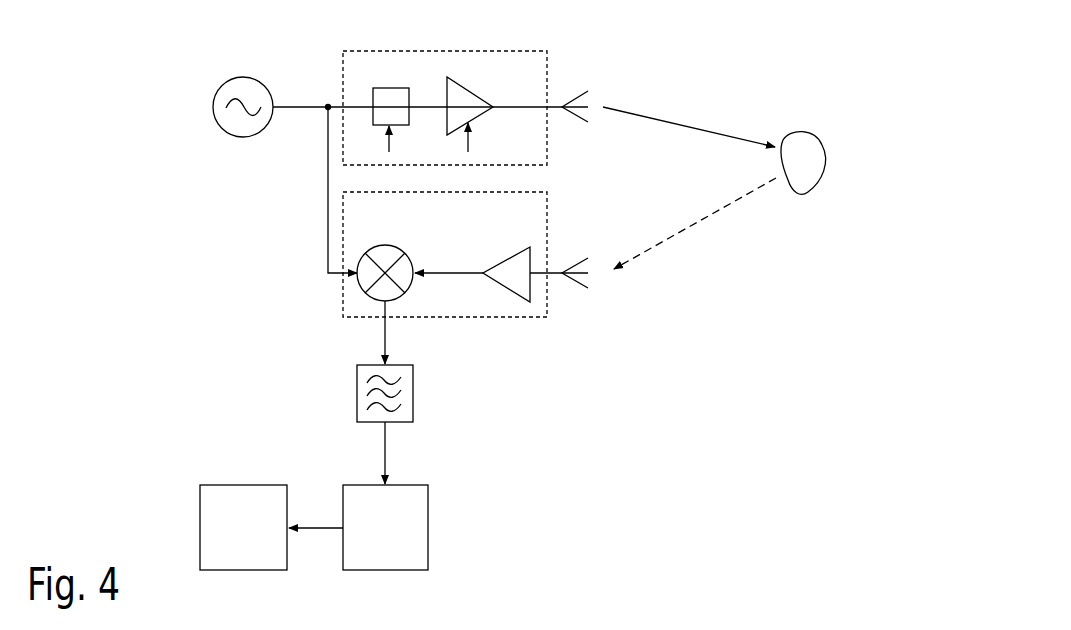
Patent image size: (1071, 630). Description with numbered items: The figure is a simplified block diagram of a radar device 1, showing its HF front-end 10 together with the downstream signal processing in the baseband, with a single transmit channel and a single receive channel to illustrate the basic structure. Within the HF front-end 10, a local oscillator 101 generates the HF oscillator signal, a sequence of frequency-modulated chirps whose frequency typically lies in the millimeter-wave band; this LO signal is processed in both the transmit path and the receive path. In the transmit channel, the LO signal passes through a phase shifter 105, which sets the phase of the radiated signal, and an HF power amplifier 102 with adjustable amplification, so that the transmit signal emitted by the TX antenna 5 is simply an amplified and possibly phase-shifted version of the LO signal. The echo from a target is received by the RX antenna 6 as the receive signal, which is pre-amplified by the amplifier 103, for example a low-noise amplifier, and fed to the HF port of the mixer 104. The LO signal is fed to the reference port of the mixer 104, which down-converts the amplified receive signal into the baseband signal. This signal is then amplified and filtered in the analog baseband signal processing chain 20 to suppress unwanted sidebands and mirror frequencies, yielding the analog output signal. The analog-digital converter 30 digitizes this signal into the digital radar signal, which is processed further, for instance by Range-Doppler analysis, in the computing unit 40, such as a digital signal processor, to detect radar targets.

The radar device 1 is at (668, 35).
The HF front-end 10 is at (275, 276).
The local oscillator 101 is at (254, 79).
The phase shifter 105 is at (410, 81).
The HF power amplifier 102 is at (479, 94).
The TX antenna 5 is at (568, 88).
The mixer 104 is at (398, 247).
The amplifier 103 is at (503, 247).
The RX antenna 6 is at (568, 256).
The analog baseband signal processing chain 20 is at (418, 397).
The analog-digital converter 30 is at (385, 527).
The computing unit 40 is at (243, 527).